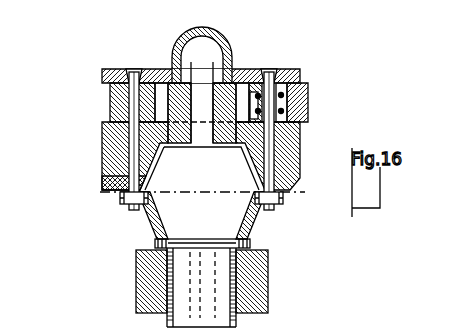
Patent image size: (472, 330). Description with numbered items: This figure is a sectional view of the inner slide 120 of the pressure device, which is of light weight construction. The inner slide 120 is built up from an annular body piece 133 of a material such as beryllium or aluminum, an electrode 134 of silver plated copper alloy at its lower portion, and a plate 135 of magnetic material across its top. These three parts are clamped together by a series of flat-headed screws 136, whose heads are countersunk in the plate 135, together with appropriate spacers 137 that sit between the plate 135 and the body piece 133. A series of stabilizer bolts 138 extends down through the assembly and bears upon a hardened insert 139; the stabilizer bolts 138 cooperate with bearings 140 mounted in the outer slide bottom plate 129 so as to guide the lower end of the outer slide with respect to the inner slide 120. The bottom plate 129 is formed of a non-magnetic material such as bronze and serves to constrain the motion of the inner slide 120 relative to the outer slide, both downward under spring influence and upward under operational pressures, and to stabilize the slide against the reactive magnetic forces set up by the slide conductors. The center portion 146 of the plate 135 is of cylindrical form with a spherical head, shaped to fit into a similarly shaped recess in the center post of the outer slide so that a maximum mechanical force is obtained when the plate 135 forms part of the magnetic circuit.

The inner slide 120 is at (287, 195).
The outer slide bottom plate 129 is at (308, 106).
The annular body piece 133 is at (102, 138).
The electrode 134 is at (106, 186).
The plate 135 is at (102, 72).
The flat-headed screws 136 is at (152, 47).
The spacers 137 is at (110, 100).
The stabilizer bolts 138 is at (268, 70).
The hardened insert 139 is at (300, 134).
The bearings 140 is at (285, 90).
The center portion of the plate 146 is at (179, 37).